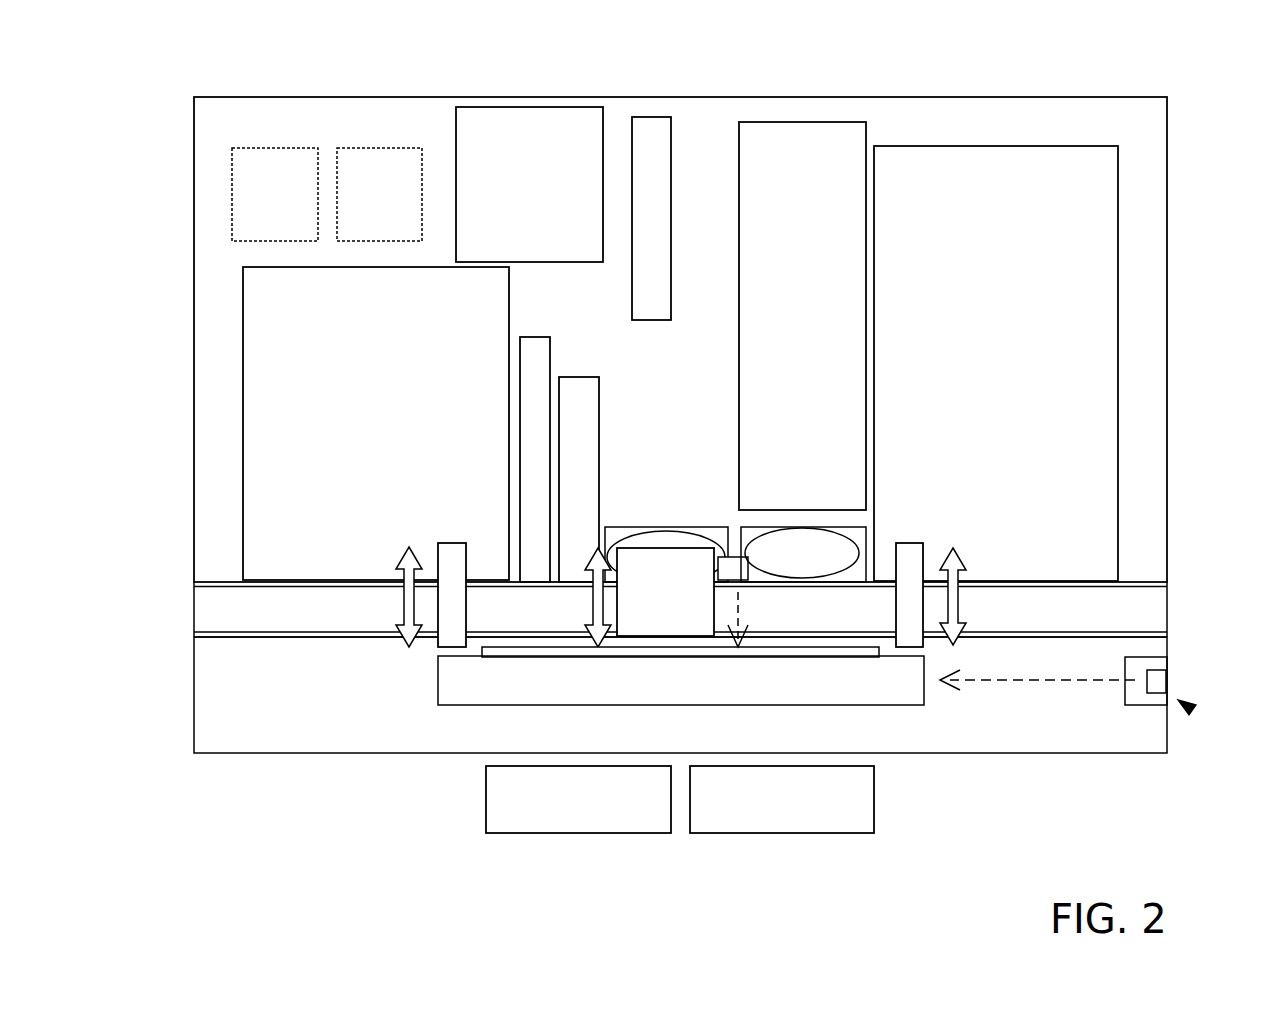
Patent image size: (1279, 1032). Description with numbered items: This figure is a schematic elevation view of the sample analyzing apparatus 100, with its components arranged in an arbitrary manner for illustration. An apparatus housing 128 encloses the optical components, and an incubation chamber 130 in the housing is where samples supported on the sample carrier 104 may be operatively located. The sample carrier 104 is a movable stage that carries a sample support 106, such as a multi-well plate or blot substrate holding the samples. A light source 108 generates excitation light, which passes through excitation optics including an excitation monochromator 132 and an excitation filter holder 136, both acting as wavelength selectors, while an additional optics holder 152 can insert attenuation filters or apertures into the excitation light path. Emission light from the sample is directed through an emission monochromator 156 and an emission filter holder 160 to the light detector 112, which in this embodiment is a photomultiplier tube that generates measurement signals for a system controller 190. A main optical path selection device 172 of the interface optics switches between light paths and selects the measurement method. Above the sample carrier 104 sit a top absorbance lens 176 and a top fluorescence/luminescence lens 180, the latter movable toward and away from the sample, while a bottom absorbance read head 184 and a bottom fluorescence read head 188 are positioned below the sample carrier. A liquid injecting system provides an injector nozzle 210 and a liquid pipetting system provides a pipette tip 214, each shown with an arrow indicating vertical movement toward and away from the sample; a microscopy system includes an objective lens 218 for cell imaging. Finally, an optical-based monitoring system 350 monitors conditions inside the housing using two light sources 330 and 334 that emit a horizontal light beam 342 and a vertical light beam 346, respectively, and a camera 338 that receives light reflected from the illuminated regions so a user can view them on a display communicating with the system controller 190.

The sample analyzing apparatus 100 is at (118, 110).
The sample carrier 104 is at (497, 705).
The sample support 106 is at (853, 657).
The light source 108 is at (296, 206).
The light detector 112 is at (550, 231).
The apparatus housing 128 is at (195, 355).
The incubation chamber 130 is at (195, 678).
The excitation monochromator 132 is at (383, 372).
The excitation filter holder 136 is at (599, 415).
The additional optics holder 152 is at (550, 357).
The emission monochromator 156 is at (1010, 238).
The emission filter holder 160 is at (672, 160).
The main optical path selection device 172 is at (830, 211).
The top absorbance lens 176 is at (853, 537).
The top fluorescence/luminescence lens 180 is at (650, 528).
The bottom absorbance read head 184 is at (767, 833).
The bottom fluorescence read head 188 is at (585, 833).
The system controller 190 is at (400, 206).
The injector nozzle 210 is at (920, 543).
The pipette tip 214 is at (447, 543).
The objective lens 218 is at (593, 595).
The light source 330 is at (1160, 682).
The light source 334 is at (733, 556).
The camera 338 is at (1142, 660).
The light beam 342 is at (1065, 682).
The light beam 346 is at (742, 607).
The optical-based monitoring system 350 is at (1195, 712).